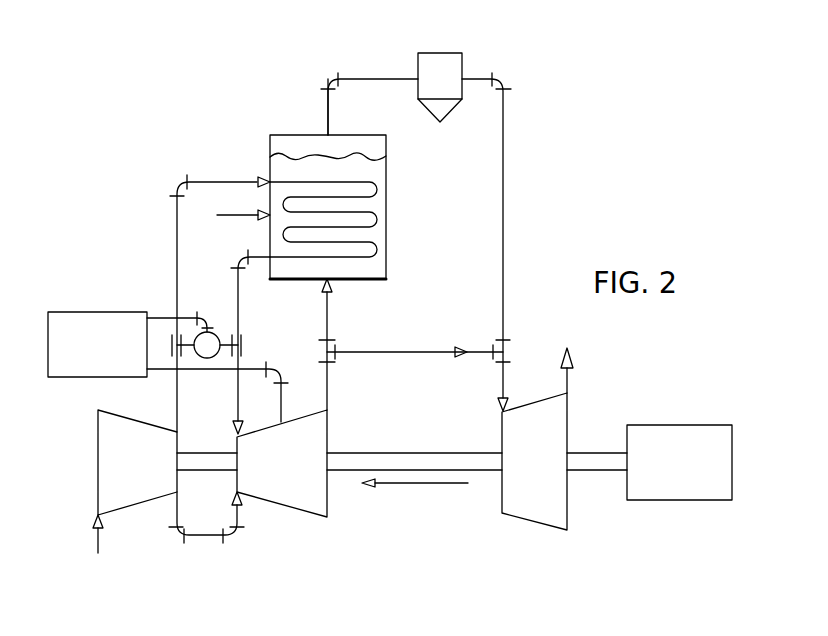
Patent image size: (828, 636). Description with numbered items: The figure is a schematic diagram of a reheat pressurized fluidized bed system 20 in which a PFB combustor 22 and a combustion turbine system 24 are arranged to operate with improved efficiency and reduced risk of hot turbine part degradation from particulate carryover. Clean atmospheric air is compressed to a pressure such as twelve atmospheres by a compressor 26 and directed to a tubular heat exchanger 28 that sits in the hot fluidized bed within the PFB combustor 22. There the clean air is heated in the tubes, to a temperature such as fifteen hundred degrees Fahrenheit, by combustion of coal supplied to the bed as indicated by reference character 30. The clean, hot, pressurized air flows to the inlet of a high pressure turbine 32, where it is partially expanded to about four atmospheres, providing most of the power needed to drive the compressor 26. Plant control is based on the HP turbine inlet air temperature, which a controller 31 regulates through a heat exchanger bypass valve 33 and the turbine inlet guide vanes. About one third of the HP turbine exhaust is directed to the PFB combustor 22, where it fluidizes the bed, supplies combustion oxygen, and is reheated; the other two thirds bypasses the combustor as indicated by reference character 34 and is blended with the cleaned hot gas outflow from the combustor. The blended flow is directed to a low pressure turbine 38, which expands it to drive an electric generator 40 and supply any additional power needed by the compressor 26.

The reheat PFB system 20 is at (429, 543).
The PFB combustor 22 is at (386, 218).
The combustion turbine system 24 is at (475, 433).
The compressor 26 is at (463, 62).
The tubular heat exchanger 28 is at (376, 191).
The coal supply 30 is at (233, 215).
The controller 31 is at (105, 312).
The high pressure turbine 32 is at (293, 510).
The heat exchanger bypass valve 33 is at (214, 335).
The PFB combustor bypass 34 is at (377, 352).
The low pressure turbine 38 is at (530, 402).
The electric generator 40 is at (672, 430).